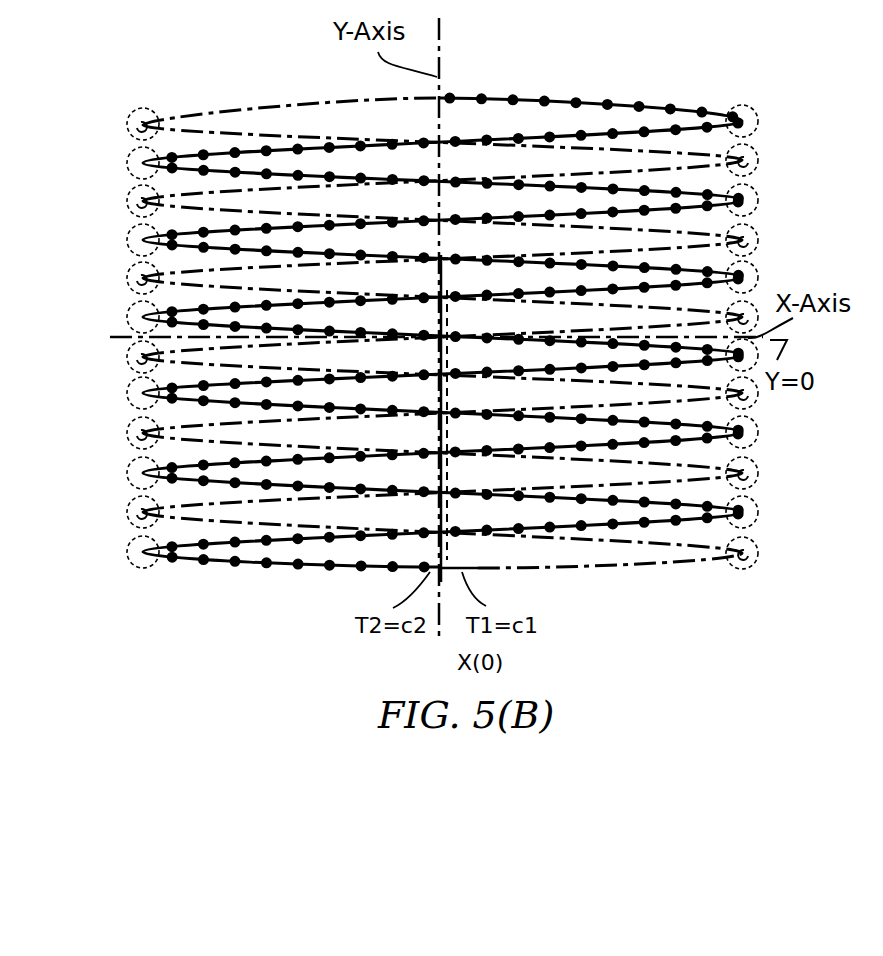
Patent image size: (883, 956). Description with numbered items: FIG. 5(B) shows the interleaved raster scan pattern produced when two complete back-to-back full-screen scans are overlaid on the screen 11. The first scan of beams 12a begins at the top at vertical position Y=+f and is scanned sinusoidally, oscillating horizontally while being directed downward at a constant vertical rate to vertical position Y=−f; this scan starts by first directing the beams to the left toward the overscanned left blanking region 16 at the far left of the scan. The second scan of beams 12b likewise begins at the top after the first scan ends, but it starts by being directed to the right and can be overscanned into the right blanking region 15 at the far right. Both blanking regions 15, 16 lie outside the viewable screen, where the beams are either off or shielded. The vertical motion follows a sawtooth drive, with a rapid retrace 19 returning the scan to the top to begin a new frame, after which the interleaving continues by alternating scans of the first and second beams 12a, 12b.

The screen 11 is at (337, 553).
The first beams 12a is at (208, 113).
The second beams 12b is at (548, 98).
The right blanking region 15 is at (757, 157).
The left blanking region 16 is at (136, 512).
The retrace 19 is at (453, 552).